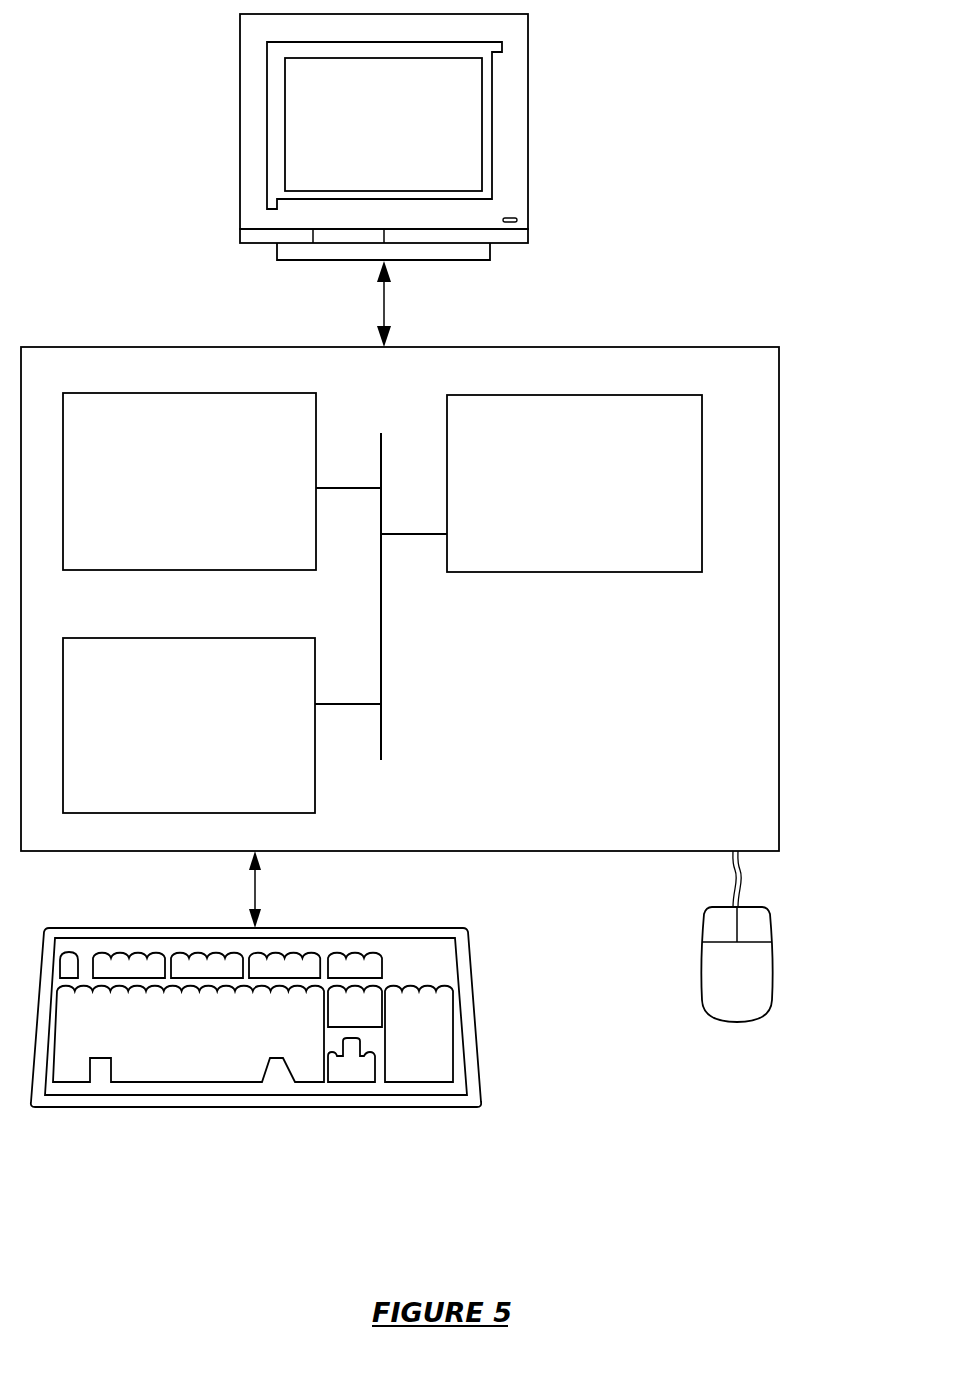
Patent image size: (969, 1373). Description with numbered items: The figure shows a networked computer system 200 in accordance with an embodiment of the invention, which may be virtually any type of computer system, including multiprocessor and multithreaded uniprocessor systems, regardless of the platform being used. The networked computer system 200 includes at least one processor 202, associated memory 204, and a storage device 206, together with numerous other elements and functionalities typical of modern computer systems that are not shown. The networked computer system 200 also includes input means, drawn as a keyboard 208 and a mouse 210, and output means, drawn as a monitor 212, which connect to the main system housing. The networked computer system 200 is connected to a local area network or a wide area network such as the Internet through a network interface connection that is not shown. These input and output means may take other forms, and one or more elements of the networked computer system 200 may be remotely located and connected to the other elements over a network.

The networked computer system 200 is at (795, 192).
The processor 202 is at (624, 496).
The memory 204 is at (215, 496).
The storage device 206 is at (210, 739).
The keyboard 208 is at (203, 1059).
The mouse 210 is at (762, 987).
The monitor 212 is at (408, 142).